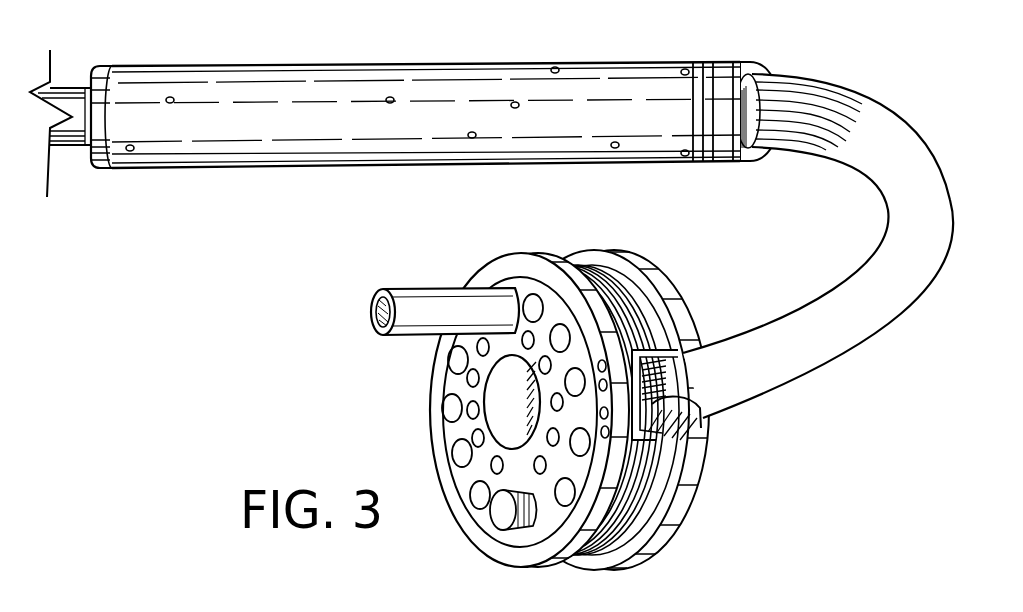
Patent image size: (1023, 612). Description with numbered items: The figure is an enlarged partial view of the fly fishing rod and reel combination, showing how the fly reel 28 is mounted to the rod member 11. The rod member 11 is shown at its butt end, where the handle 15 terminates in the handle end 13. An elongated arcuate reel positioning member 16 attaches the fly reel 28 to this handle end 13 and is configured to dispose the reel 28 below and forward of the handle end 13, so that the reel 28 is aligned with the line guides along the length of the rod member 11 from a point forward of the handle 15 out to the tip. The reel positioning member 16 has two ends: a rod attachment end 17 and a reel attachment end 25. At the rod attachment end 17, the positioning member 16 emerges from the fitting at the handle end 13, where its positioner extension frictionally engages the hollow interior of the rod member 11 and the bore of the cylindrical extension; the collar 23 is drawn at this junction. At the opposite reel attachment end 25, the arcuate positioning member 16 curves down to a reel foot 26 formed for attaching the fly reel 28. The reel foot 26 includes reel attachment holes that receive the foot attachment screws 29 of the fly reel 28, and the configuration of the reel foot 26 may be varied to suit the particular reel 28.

The rod member 11 is at (69, 87).
The handle end 13 is at (690, 160).
The handle 15 is at (386, 64).
The reel positioning member 16 is at (931, 171).
The rod attachment end 17 is at (785, 145).
The end cap collar 23 is at (752, 61).
The reel attachment end 25 is at (717, 365).
The reel foot 26 is at (704, 416).
The fly reel 28 is at (653, 263).
The foot attachment screws 29 is at (598, 394).